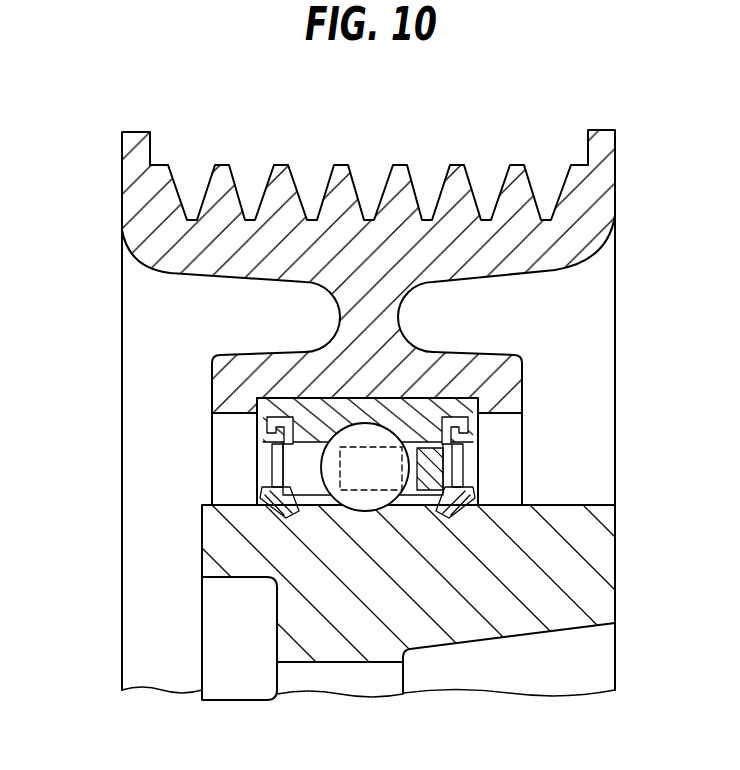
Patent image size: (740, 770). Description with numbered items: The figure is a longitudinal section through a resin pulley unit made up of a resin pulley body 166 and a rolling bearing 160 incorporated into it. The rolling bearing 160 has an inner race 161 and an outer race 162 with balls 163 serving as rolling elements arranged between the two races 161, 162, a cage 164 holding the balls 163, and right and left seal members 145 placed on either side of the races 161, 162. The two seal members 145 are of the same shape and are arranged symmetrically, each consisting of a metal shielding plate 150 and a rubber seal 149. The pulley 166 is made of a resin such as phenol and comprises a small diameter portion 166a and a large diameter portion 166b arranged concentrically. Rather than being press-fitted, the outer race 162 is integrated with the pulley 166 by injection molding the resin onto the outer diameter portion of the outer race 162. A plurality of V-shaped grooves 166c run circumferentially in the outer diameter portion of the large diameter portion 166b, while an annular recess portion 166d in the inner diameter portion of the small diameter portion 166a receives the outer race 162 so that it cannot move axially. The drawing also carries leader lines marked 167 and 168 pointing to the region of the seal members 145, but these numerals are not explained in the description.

The seal member 145 is at (405, 568).
The rubber seal 149 is at (408, 603).
The shielding plate 150 is at (266, 442).
The rolling bearing 160 is at (405, 523).
The inner race 161 is at (600, 561).
The outer race 162 is at (478, 398).
The balls 163 is at (372, 497).
The cage 164 is at (427, 483).
The resin pulley body 166 is at (357, 399).
The small diameter portion 166a is at (237, 380).
The large diameter portion 166b is at (133, 207).
The V-shaped grooves 166c is at (283, 167).
The annular recess portion 166d is at (420, 397).
The seal retaining groove 167 is at (275, 417).
The seal lip end 168 is at (283, 505).